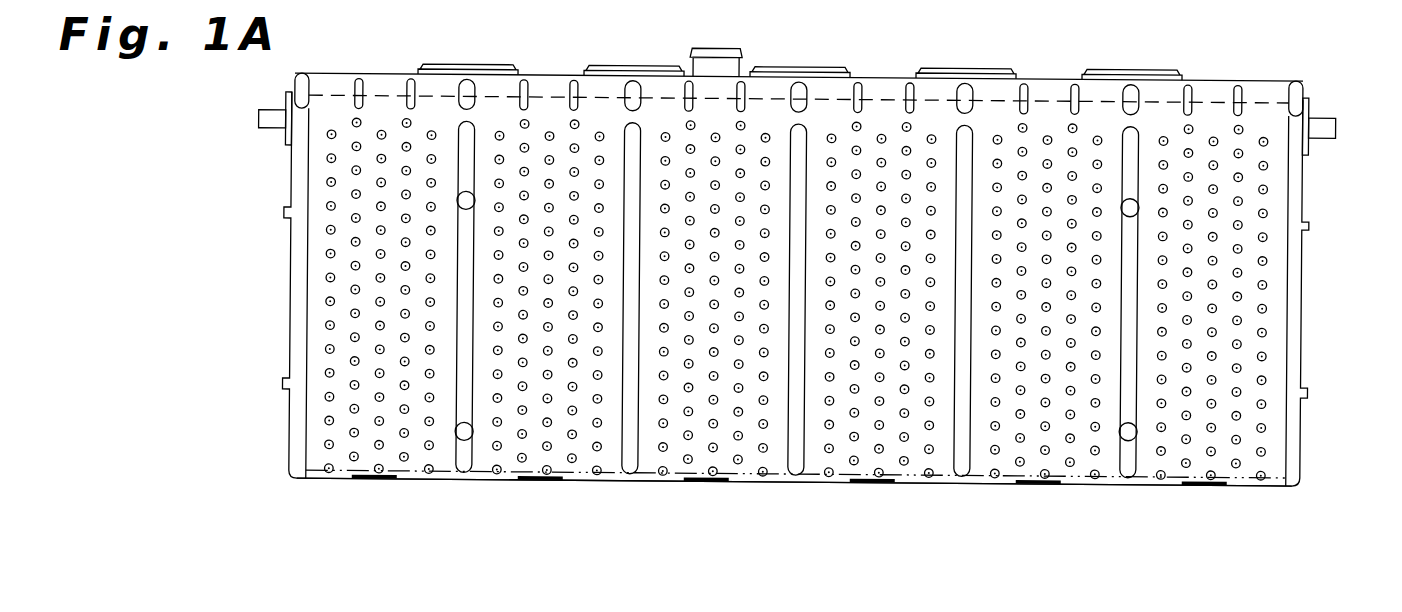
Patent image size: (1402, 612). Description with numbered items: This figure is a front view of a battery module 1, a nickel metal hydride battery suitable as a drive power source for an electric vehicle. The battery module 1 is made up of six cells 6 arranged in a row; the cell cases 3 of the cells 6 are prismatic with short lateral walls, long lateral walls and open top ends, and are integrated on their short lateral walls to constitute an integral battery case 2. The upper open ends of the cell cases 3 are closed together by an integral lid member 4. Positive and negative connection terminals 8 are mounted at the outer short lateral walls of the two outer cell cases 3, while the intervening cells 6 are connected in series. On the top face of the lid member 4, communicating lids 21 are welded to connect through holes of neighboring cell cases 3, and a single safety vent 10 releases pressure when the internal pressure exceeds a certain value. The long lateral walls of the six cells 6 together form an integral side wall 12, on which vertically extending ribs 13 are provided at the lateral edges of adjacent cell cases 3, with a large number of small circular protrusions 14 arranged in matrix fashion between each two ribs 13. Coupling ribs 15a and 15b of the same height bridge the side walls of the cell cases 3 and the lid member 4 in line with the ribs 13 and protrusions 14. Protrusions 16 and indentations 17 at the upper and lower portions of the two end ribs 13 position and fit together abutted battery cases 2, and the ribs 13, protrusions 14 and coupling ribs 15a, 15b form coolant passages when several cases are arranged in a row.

The battery module 1 is at (268, 303).
The integral battery case 2 is at (288, 344).
The cell case 3 is at (368, 458).
The lid member 4 is at (328, 83).
The cell 6 is at (378, 484).
The connection terminal 8 is at (272, 118).
The safety vent 10 is at (727, 70).
The side wall 12 is at (778, 458).
The rib 13 is at (299, 261).
The protrusion 14 is at (330, 443).
The coupling rib 15a is at (1132, 96).
The coupling rib 15b is at (1074, 92).
The protrusion 16 is at (463, 441).
The indentation 17 is at (465, 200).
The communicating lid 21 is at (458, 67).